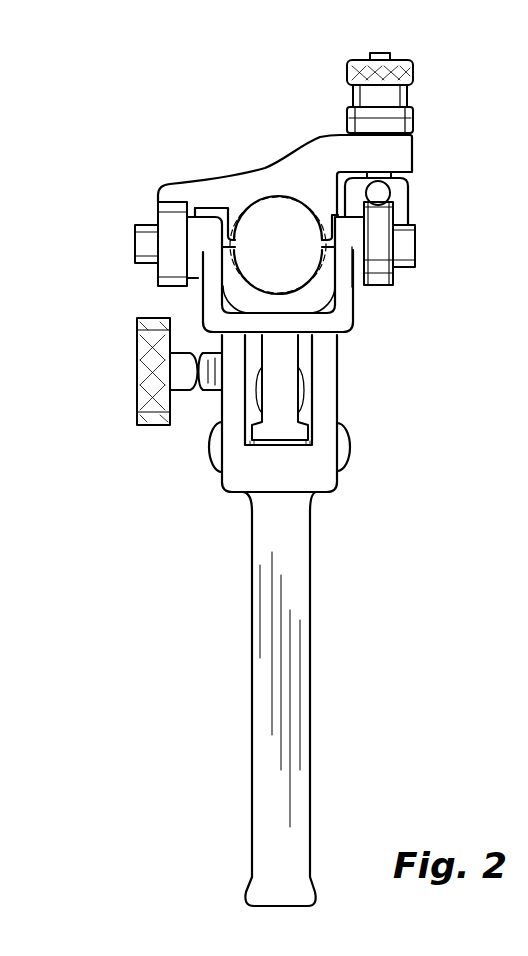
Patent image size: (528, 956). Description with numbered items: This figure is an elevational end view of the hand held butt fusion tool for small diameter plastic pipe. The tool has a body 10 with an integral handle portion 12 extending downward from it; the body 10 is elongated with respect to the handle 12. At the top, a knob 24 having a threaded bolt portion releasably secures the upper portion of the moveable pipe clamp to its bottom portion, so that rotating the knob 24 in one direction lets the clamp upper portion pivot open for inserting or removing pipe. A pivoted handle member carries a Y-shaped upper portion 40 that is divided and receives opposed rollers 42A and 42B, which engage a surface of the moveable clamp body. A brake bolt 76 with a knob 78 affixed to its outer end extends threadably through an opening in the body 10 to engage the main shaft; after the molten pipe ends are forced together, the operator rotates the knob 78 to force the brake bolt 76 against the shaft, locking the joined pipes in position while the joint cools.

The knob 24 is at (398, 73).
The roller 42A is at (173, 252).
The roller 42B is at (395, 273).
The knob 78 is at (153, 410).
The brake bolt 76 is at (200, 393).
The body 10 is at (323, 408).
The Y-shaped upper portion 40 is at (282, 385).
The handle portion 12 is at (285, 685).